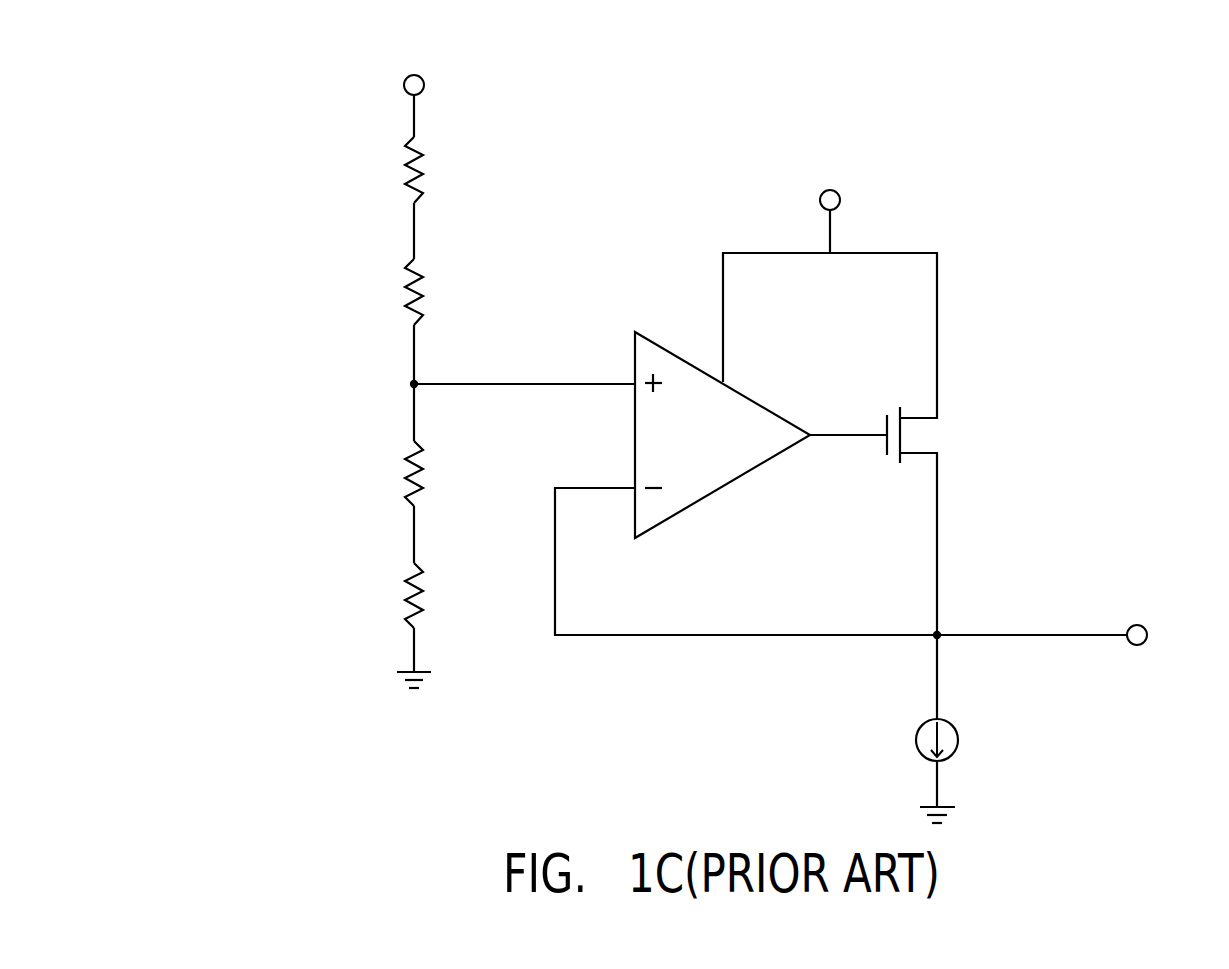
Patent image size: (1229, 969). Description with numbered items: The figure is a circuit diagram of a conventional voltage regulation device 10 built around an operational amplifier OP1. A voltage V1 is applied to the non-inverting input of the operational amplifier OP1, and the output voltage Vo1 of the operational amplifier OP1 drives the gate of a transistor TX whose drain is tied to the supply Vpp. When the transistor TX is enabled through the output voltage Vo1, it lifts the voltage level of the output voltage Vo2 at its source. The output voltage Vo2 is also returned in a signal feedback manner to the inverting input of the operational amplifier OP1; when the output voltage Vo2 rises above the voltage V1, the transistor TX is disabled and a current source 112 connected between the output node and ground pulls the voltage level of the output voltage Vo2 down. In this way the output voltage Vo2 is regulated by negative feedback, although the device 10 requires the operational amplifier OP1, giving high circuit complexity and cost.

The voltage regulation device 10 is at (97, 54).
The current source 112 is at (958, 737).
The operational amplifier OP1 is at (722, 435).
The transistor TX is at (933, 563).
The voltage V1 is at (501, 386).
The output voltage of the operational amplifier Vo1 is at (862, 420).
The output voltage Vo2 is at (1070, 635).
The supply voltage terminal Vpp is at (622, 146).